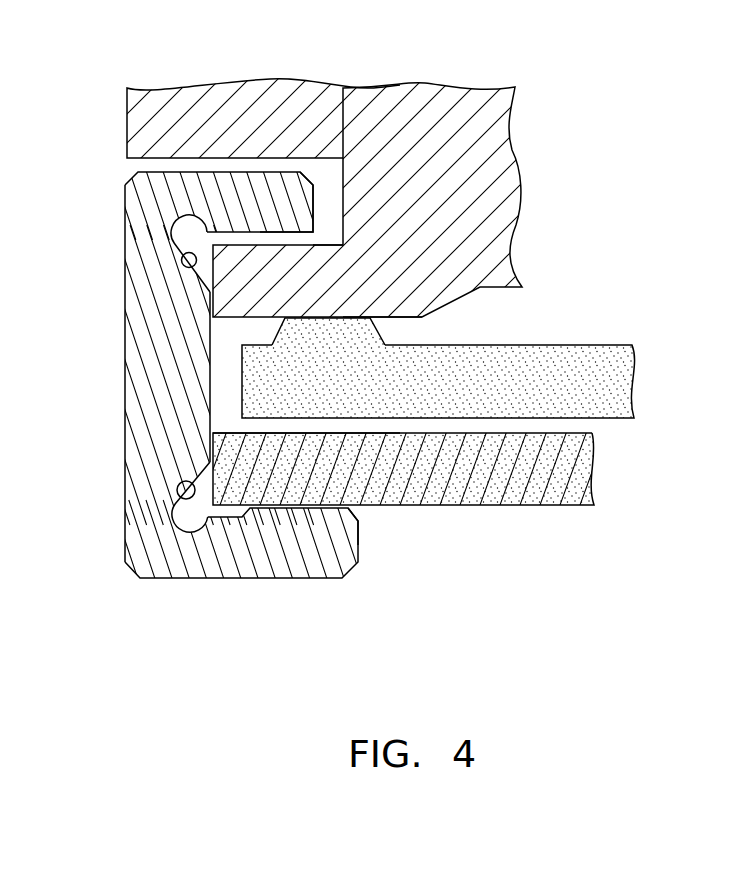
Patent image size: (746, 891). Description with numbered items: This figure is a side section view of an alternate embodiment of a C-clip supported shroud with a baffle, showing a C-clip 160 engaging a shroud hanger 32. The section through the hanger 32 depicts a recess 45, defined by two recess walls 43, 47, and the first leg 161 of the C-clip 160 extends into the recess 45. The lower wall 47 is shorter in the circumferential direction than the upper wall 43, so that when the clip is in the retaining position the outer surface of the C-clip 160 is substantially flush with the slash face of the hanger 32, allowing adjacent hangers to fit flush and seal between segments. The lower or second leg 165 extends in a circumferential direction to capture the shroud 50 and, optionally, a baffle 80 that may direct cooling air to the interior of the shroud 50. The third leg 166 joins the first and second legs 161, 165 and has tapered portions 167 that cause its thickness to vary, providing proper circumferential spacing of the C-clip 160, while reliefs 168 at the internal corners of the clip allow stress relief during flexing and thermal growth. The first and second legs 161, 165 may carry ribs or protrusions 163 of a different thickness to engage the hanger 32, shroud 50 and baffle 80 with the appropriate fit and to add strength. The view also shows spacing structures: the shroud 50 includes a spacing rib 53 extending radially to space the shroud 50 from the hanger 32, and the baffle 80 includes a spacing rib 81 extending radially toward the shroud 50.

The hanger 32 is at (438, 112).
The recess wall 43 is at (233, 107).
The recess 45 is at (333, 185).
The lower wall 47 is at (271, 300).
The shroud 50 is at (520, 363).
The spacing rib 53 is at (340, 337).
The baffle 80 is at (500, 478).
The spacing rib 81 is at (312, 425).
The C-clip 160 is at (225, 363).
The first leg 161 is at (207, 173).
The protrusion 163 is at (273, 240).
The second leg 165 is at (228, 580).
The third leg 166 is at (165, 395).
The tapered portion 167 is at (182, 259).
The relief 168 is at (171, 225).